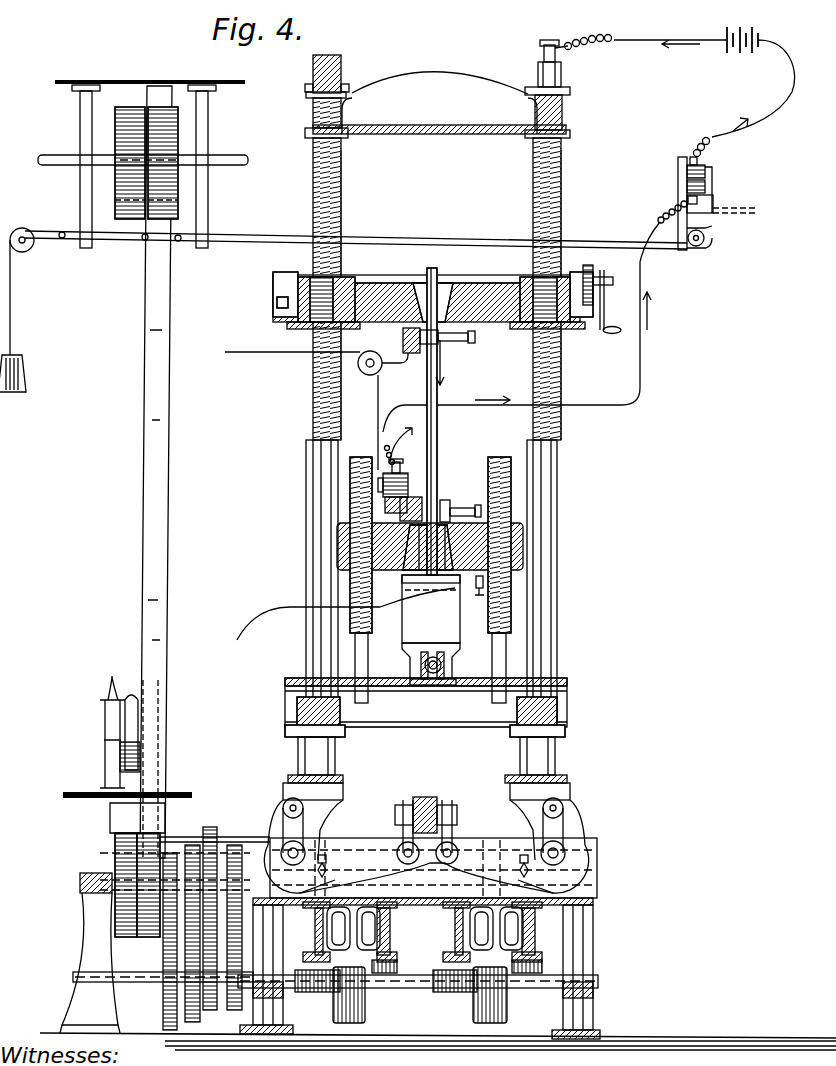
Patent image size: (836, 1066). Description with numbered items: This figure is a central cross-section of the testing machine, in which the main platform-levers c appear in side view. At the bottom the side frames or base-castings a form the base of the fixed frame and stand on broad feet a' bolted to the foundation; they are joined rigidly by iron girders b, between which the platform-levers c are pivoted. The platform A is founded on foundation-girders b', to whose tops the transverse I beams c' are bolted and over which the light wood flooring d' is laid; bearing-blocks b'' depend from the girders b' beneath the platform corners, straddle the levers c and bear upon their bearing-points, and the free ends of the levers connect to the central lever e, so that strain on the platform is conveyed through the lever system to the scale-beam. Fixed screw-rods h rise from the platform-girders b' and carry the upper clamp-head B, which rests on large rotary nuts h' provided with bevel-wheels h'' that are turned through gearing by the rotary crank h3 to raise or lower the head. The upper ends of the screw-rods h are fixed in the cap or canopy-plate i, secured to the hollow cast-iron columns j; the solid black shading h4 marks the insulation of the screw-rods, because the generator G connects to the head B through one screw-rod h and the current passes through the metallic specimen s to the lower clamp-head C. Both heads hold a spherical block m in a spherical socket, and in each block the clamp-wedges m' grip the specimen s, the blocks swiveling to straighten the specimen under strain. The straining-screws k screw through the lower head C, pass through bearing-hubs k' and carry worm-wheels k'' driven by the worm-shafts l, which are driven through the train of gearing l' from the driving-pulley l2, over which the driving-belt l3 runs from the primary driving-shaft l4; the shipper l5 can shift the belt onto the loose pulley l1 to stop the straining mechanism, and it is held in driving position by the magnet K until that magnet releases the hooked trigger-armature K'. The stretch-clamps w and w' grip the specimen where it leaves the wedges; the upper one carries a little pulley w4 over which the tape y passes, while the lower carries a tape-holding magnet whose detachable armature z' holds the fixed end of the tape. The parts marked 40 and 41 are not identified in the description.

The electric source or generator G is at (704, 78).
The shipper-magnet K is at (710, 201).
The hooked trigger-armature K' is at (570, 306).
The shipper l5 is at (343, 304).
The driving-belt l3 is at (156, 472).
The driving-pulley l2 is at (178, 140).
The primary driving-shaft l4 is at (143, 149).
The loose pulley l1 is at (118, 210).
The fixed screw-rods h is at (447, 425).
The insulation shading h4 is at (305, 104).
The cap or canopy-plate i is at (462, 85).
The hollow cast-iron columns j is at (342, 160).
The upper clamp-head B is at (433, 282).
The rotary nuts h' is at (434, 284).
The bevel-wheels h'' is at (420, 342).
The spherical block m is at (429, 414).
The specimen s is at (450, 421).
The clamp-wedges m' is at (457, 349).
The stretch-clamp w' is at (395, 342).
The pulley w4 is at (366, 374).
The tape y is at (301, 409).
The rotary crank h3 is at (610, 299).
The lower clamp-head C is at (482, 523).
The straining-screws k is at (430, 580).
The stretch-clamp w is at (429, 499).
The detachable armature z' is at (402, 460).
The box 40 is at (360, 609).
The clevis 41 is at (437, 664).
The platform A is at (412, 667).
The flooring d' is at (444, 677).
The transverse I beams c' is at (426, 712).
The foundation-girders b' is at (426, 740).
The bearing-blocks b'' is at (427, 835).
The central lever e is at (426, 818).
The main platform-levers c is at (434, 873).
The iron girders b is at (377, 871).
The side frames a is at (335, 951).
The feet a' is at (344, 1024).
The bearing-hubs k' is at (422, 932).
The worm-wheels k'' is at (418, 966).
The worm-shafts l is at (290, 917).
The train of gearing l' is at (160, 931).